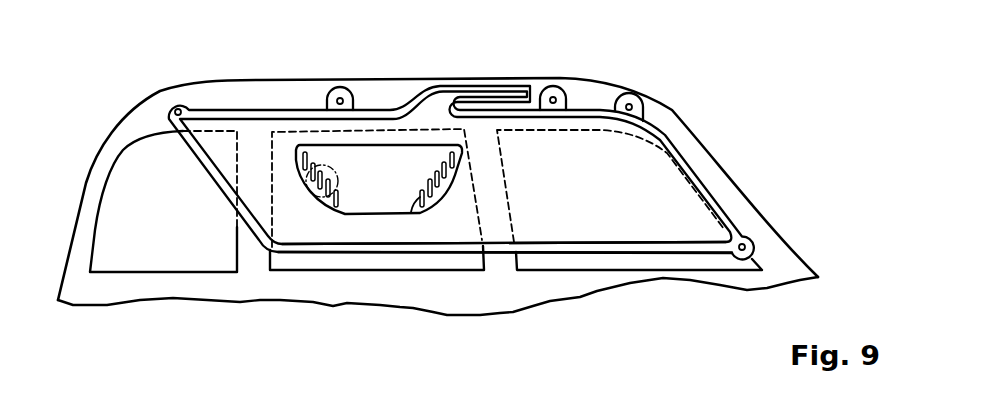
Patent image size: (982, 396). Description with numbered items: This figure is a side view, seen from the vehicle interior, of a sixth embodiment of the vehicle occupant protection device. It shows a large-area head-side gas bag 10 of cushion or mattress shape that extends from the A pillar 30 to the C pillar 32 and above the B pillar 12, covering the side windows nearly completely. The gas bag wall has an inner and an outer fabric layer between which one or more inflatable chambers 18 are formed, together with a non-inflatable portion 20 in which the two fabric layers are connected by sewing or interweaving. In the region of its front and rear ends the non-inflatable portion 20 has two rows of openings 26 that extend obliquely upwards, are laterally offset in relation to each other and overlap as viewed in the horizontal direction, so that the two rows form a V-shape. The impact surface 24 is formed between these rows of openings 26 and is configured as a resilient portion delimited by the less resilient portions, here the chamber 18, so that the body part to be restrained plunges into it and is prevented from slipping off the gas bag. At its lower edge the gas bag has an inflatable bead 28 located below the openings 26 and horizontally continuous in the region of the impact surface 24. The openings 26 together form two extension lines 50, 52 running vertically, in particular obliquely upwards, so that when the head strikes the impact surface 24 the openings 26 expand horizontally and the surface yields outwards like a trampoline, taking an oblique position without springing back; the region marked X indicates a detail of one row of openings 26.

The head-side gas bag 10 is at (461, 145).
The B pillar 12 is at (507, 258).
The inflatable chamber 18 is at (600, 157).
The non-inflatable portion 20 is at (379, 195).
The impact surface 24 is at (380, 168).
The openings 26 is at (411, 212).
The inflatable bead 28 is at (380, 233).
The A pillar 30 is at (682, 126).
The C pillar 32 is at (253, 260).
The extension line 50 is at (316, 222).
The extension line 52 is at (430, 218).
The detail region X is at (325, 167).